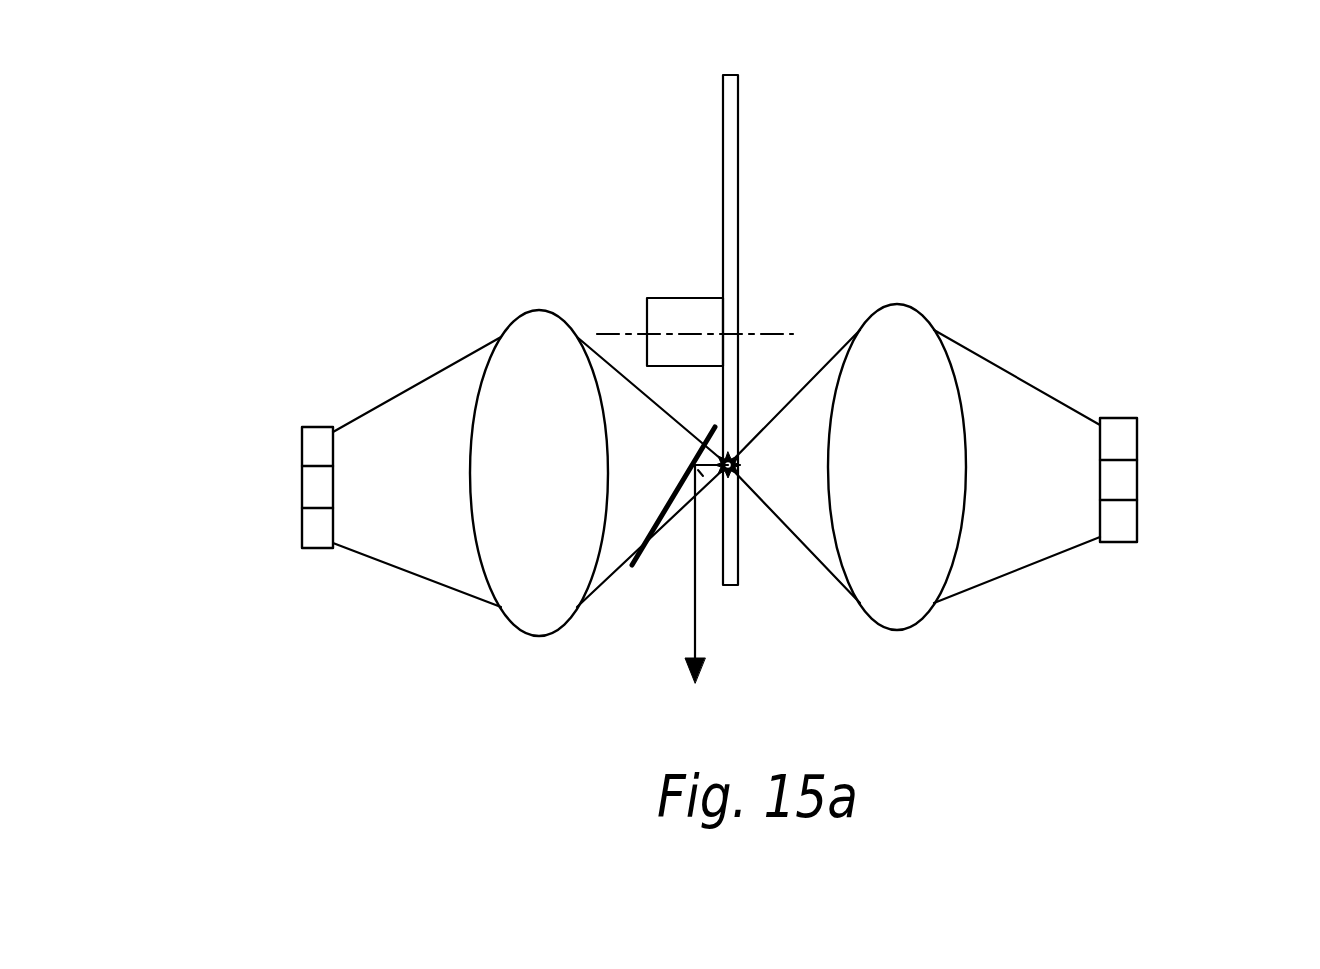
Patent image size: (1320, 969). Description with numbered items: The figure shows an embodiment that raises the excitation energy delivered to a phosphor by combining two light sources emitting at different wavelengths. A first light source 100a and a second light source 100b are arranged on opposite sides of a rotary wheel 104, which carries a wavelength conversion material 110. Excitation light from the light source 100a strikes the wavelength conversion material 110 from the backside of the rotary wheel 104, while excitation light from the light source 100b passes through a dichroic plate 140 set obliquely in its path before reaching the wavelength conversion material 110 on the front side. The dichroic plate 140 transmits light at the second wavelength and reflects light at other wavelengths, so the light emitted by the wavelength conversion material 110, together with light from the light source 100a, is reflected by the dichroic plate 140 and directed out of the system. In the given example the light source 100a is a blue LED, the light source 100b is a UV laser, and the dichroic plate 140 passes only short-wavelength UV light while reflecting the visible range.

The light source 100a is at (1122, 423).
The light source 100b is at (317, 437).
The rotary wheel 104 is at (730, 88).
The wavelength conversion material 110 is at (745, 570).
The dichroic plate 140 is at (643, 557).